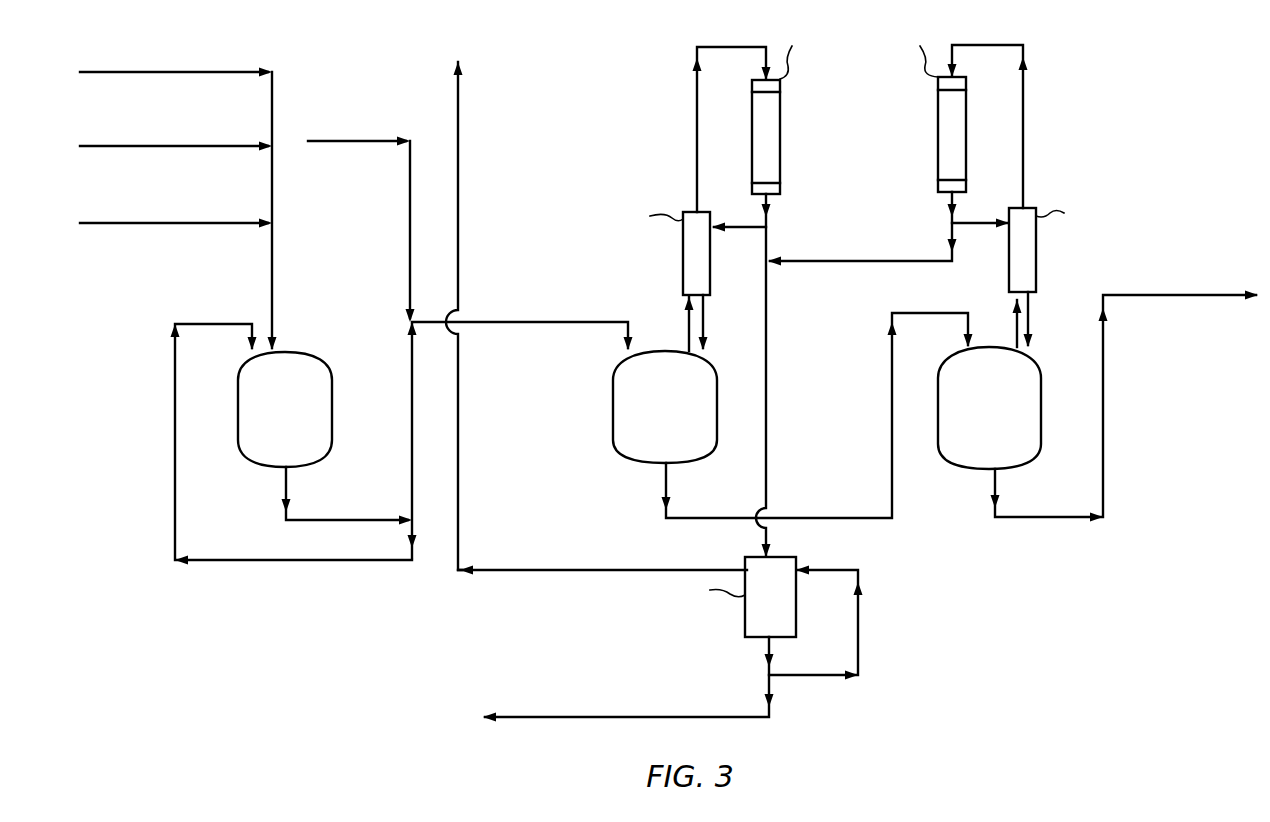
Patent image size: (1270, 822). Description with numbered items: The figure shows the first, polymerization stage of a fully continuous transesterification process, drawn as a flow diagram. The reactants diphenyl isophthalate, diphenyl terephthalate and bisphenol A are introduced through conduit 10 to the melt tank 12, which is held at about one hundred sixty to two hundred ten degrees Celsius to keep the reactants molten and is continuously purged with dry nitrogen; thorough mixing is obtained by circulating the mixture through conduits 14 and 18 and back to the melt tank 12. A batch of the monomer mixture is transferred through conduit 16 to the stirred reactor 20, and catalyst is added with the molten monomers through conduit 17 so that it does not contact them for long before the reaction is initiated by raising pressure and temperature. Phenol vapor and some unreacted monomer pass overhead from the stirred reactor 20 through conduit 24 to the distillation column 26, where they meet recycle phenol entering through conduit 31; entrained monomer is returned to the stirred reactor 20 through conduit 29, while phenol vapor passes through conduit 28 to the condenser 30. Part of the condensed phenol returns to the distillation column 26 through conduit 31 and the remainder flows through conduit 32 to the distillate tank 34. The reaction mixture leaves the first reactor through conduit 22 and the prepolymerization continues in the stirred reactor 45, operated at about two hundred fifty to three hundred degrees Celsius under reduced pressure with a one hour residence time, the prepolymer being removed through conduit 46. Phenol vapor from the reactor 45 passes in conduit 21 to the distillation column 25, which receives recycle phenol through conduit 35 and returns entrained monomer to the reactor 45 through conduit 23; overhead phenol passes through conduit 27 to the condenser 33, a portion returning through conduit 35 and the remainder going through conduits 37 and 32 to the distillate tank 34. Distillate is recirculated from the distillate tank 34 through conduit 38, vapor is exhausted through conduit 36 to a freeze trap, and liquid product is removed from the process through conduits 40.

The conduit 10 is at (273, 100).
The melt tank 12 is at (332, 401).
The conduit 14 is at (333, 520).
The conduit 16 is at (412, 456).
The conduit 17 is at (410, 191).
The conduit 18 is at (310, 560).
The stirred reactor 20 is at (613, 437).
The conduit 21 is at (1015, 331).
The first reactor outlet line to second reactor 22 is at (664, 491).
The conduit 23 is at (1030, 330).
The conduit 24 is at (689, 332).
The distillation column 25 is at (1036, 277).
The distillation column 26 is at (683, 272).
The conduit 27 is at (1025, 98).
The conduit 28 is at (697, 97).
The conduit 29 is at (704, 332).
The condenser 30 is at (780, 153).
The conduit 31 is at (748, 232).
The conduit 32 is at (768, 466).
The condenser 33 is at (966, 152).
The distillate tank 34 is at (745, 637).
The conduit 35 is at (948, 204).
The conduit 36 is at (590, 568).
The conduit 37 is at (877, 250).
The conduit 38 is at (860, 644).
The conduits 40 is at (645, 717).
The stirred reactor 45 is at (1040, 452).
The conduit 46 is at (1020, 517).